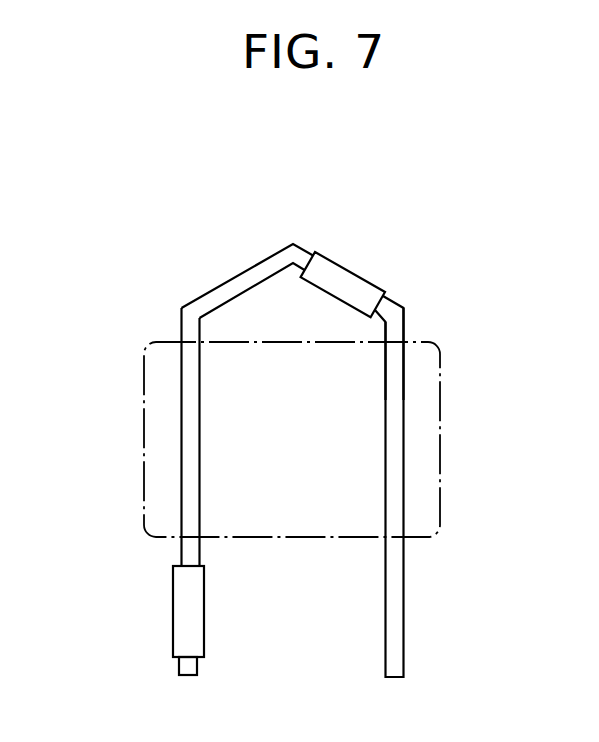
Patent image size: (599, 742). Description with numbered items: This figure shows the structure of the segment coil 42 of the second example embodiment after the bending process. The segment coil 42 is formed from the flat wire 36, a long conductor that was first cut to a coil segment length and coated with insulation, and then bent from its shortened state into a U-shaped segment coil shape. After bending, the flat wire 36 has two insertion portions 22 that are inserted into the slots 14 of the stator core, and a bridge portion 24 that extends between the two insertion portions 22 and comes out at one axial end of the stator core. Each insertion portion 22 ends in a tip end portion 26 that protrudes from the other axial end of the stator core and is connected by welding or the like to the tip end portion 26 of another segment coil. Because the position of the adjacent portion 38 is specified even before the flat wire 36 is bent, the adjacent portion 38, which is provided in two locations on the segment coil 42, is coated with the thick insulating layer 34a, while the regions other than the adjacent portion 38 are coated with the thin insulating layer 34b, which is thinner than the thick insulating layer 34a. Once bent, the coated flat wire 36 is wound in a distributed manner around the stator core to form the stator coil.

The slot 14 is at (433, 425).
The insertion portion 22 is at (200, 450).
The bridge portion 24 is at (232, 281).
The tip end portion 26 is at (402, 607).
The thick insulating layer 34a is at (256, 456).
The adjacent portion 38 is at (357, 270).
The thin insulating layer 34b is at (403, 380).
The flat wire 36 is at (287, 403).
The segment coil 42 is at (390, 207).